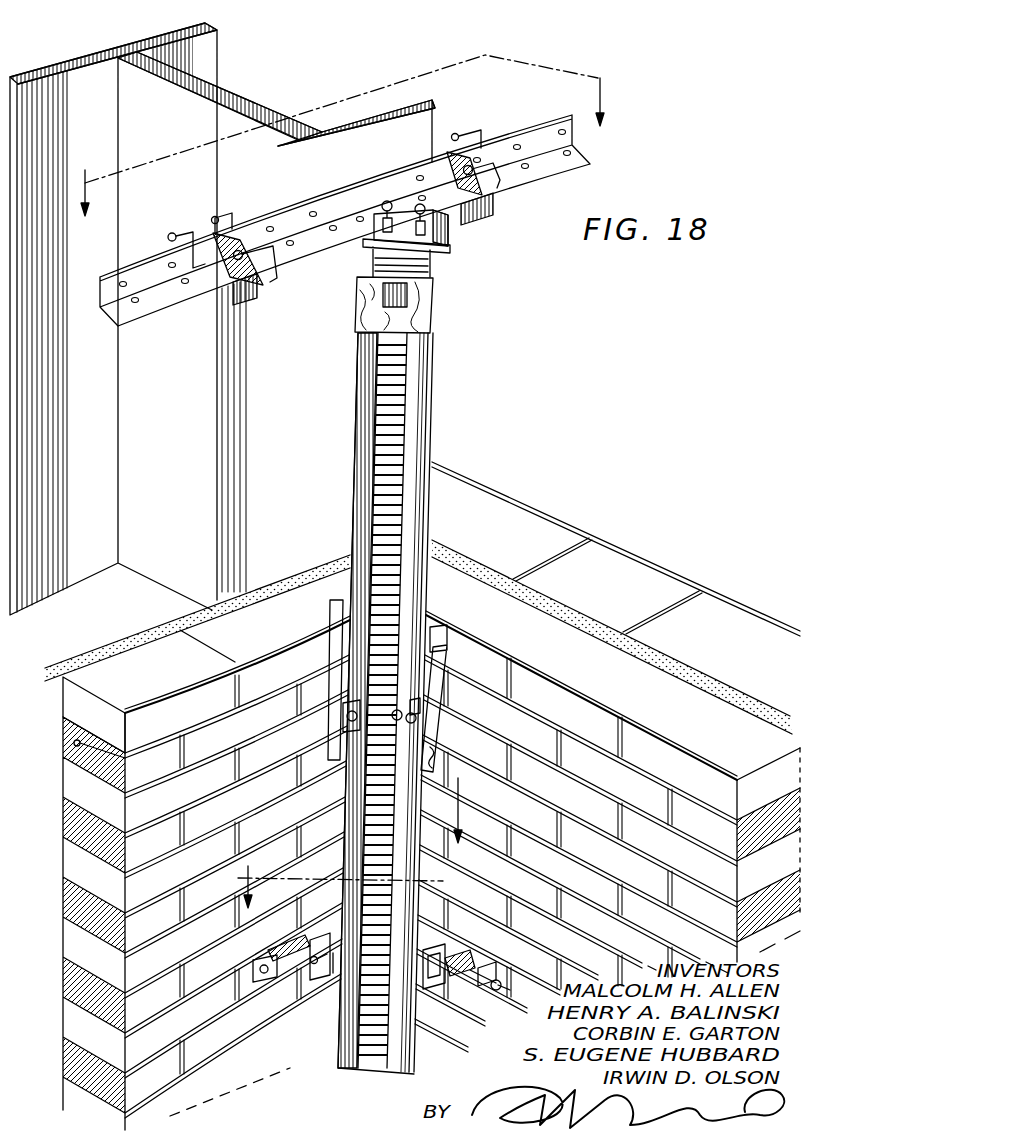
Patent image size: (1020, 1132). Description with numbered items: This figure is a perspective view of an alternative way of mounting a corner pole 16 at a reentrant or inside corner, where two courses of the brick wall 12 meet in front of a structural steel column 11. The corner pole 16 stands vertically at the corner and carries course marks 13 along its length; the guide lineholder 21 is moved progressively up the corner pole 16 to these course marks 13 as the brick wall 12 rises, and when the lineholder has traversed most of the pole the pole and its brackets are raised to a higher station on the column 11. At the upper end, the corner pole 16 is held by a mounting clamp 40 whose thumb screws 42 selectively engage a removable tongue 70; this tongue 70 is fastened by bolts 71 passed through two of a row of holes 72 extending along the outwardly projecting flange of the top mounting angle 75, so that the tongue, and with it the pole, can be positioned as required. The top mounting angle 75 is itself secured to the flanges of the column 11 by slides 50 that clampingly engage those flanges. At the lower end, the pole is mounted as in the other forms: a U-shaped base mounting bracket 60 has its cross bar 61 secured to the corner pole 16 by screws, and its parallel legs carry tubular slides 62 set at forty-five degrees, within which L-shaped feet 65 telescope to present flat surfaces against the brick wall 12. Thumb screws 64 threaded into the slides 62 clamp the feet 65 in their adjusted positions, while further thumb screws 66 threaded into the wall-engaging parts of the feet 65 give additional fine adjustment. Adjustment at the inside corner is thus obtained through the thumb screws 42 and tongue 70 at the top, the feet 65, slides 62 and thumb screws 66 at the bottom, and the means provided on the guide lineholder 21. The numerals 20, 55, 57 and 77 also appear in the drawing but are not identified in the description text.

The column 11 is at (283, 63).
The brick wall 12 is at (230, 1099).
The course marks 13 is at (397, 418).
The corner pole 16 is at (430, 483).
The coping stone 20 is at (177, 690).
The guide lineholder 21 is at (340, 697).
The mounting clamp 40 is at (436, 280).
The thumb screws 42 is at (278, 280).
The slides 50 is at (250, 294).
The bolt 55 is at (282, 290).
The hook 57 is at (213, 222).
The base mounting bracket 60 is at (320, 968).
The cross bar 61 is at (437, 950).
The slides 62 is at (462, 958).
The thumb screws 64 is at (497, 982).
The feet 65 is at (256, 963).
The thumb screws 66 is at (278, 948).
The removable tongue 70 is at (452, 244).
The bolts 71 is at (416, 204).
The holes 72 is at (290, 241).
The top mounting angle 75 is at (562, 129).
The angle bar 77 is at (153, 297).